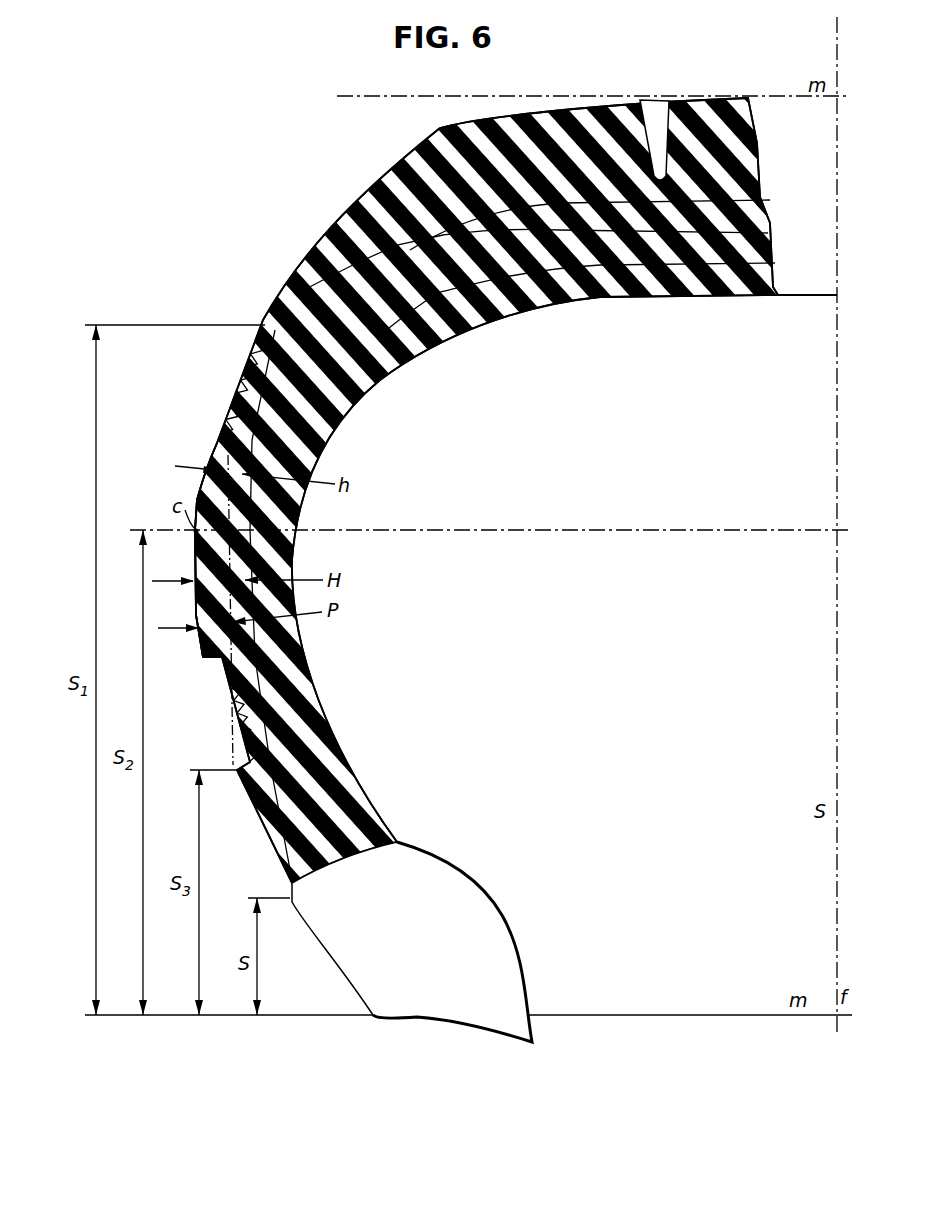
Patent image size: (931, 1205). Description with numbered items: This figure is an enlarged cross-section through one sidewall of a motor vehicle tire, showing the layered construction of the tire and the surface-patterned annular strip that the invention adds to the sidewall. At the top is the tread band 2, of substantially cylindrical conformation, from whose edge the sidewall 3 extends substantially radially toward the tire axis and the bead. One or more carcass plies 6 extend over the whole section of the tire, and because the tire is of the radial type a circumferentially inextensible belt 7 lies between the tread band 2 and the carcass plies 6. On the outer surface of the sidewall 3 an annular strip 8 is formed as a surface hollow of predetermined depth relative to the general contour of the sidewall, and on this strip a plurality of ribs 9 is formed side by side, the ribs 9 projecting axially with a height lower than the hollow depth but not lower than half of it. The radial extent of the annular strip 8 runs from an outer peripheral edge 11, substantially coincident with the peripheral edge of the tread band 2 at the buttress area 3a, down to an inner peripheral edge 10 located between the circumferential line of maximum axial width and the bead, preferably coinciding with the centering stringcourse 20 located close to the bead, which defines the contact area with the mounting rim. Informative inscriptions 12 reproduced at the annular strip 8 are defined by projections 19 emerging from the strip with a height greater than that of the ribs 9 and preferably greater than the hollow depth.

The tread band 2 is at (722, 131).
The sidewall 3 is at (243, 820).
The buttress area 3a is at (262, 312).
The carcass plies 6 is at (283, 512).
The belt 7 is at (592, 240).
The annular strip 8 is at (212, 423).
The ribs 9 is at (258, 351).
The inner peripheral edge 10 is at (219, 758).
The outer peripheral edge 11 is at (270, 331).
The informative inscriptions 12 is at (215, 443).
The projections 19 is at (212, 498).
The centering stringcourse 20 is at (292, 903).